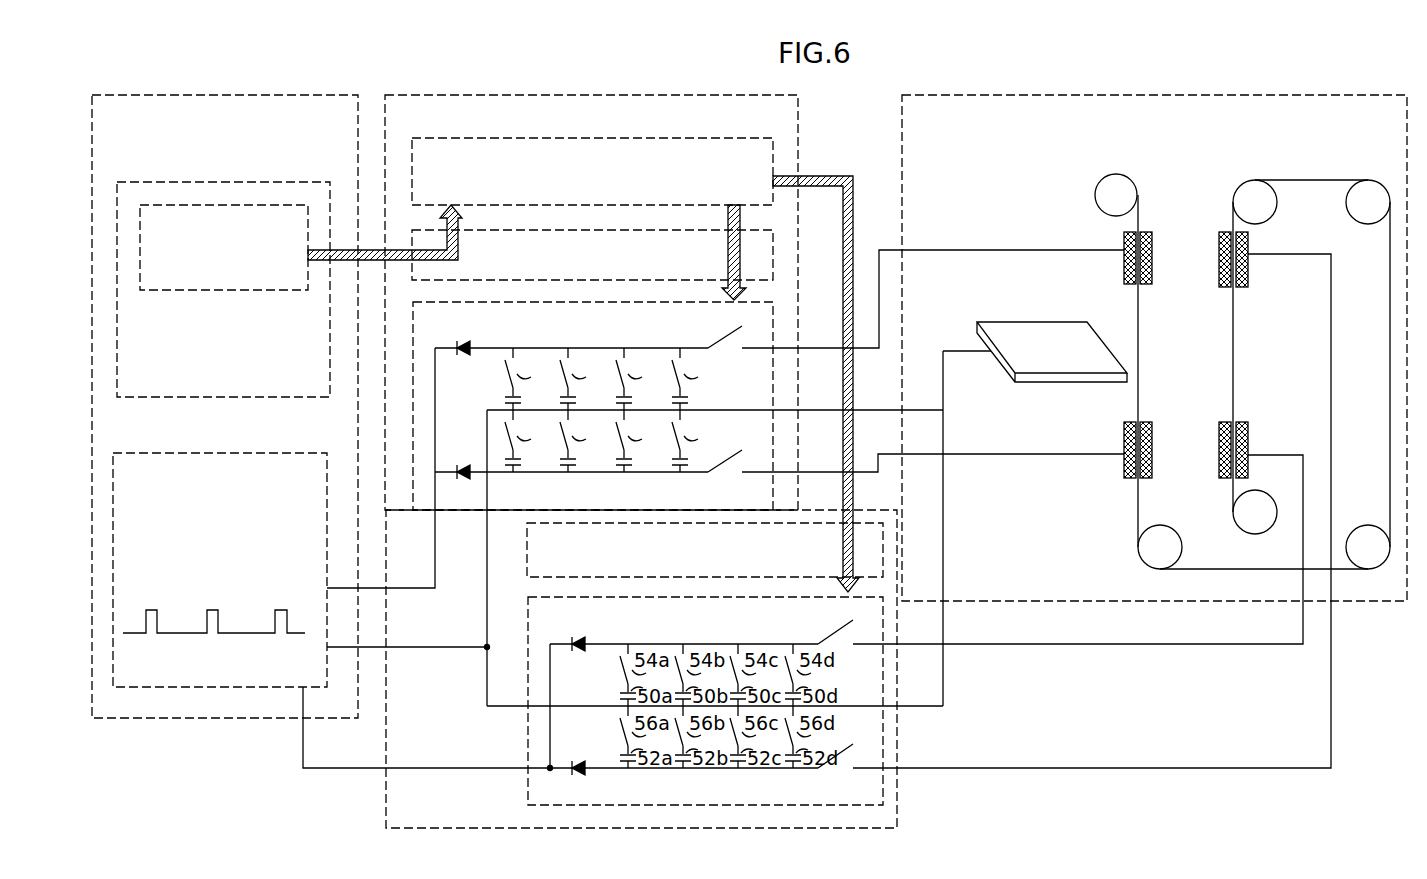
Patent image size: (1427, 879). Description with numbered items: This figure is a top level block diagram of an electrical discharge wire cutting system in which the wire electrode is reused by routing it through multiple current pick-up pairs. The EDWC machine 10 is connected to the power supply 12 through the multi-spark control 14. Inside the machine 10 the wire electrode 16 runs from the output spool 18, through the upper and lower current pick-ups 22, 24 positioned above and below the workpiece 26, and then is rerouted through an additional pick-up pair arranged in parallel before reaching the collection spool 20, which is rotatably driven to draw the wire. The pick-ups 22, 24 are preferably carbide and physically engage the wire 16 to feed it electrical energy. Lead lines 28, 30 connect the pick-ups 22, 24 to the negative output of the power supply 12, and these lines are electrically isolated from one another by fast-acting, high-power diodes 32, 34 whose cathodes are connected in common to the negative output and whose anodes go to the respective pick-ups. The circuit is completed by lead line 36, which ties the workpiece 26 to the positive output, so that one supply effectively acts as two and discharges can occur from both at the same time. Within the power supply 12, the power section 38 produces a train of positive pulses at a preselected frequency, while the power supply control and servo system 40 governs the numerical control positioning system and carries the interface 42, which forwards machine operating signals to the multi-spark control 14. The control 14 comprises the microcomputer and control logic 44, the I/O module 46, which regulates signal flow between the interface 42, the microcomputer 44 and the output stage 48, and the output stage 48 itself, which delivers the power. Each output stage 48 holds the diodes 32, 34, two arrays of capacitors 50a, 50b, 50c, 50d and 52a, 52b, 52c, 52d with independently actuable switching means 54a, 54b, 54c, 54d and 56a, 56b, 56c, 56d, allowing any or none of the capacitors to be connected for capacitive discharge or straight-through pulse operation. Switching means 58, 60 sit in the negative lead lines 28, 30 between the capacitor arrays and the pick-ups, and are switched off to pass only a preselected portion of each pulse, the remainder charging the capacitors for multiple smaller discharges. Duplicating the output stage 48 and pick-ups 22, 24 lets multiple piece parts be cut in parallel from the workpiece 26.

The EDWC machine 10 is at (1042, 95).
The power supply 12 is at (208, 95).
The multi-spark control 14 is at (588, 95).
The wire electrode 16 is at (1322, 180).
The output spool 18 is at (1135, 187).
The collection spool 20 is at (1235, 525).
The upper current pick-up 22 is at (1151, 251).
The lower current pick-up 24 is at (1152, 450).
The workpiece 26 is at (1038, 322).
The first lead line 28 is at (996, 250).
The second lead line 30 is at (986, 454).
The first diode 32 is at (471, 349).
The second diode 34 is at (466, 465).
The positive lead line 36 is at (943, 403).
The power section 38 is at (240, 453).
The power supply control and servo system 40 is at (221, 182).
The interface 42 is at (308, 222).
The microcomputer and control logic 44 is at (773, 157).
The I/O module 46 is at (773, 240).
The output stage 48 is at (773, 308).
The capacitor 50a is at (528, 392).
The capacitor 50b is at (583, 392).
The capacitor 50c is at (639, 392).
The capacitor 50d is at (695, 392).
The capacitor 52a is at (528, 454).
The capacitor 52b is at (583, 454).
The capacitor 52c is at (639, 454).
The capacitor 52d is at (695, 454).
The switching means 54a is at (530, 372).
The switching means 54b is at (585, 372).
The switching means 54c is at (640, 372).
The switching means 54d is at (697, 372).
The switching means 56a is at (530, 434).
The switching means 56b is at (585, 434).
The switching means 56c is at (640, 434).
The switching means 56d is at (697, 434).
The switching means 58 is at (731, 355).
The switching means 60 is at (729, 466).